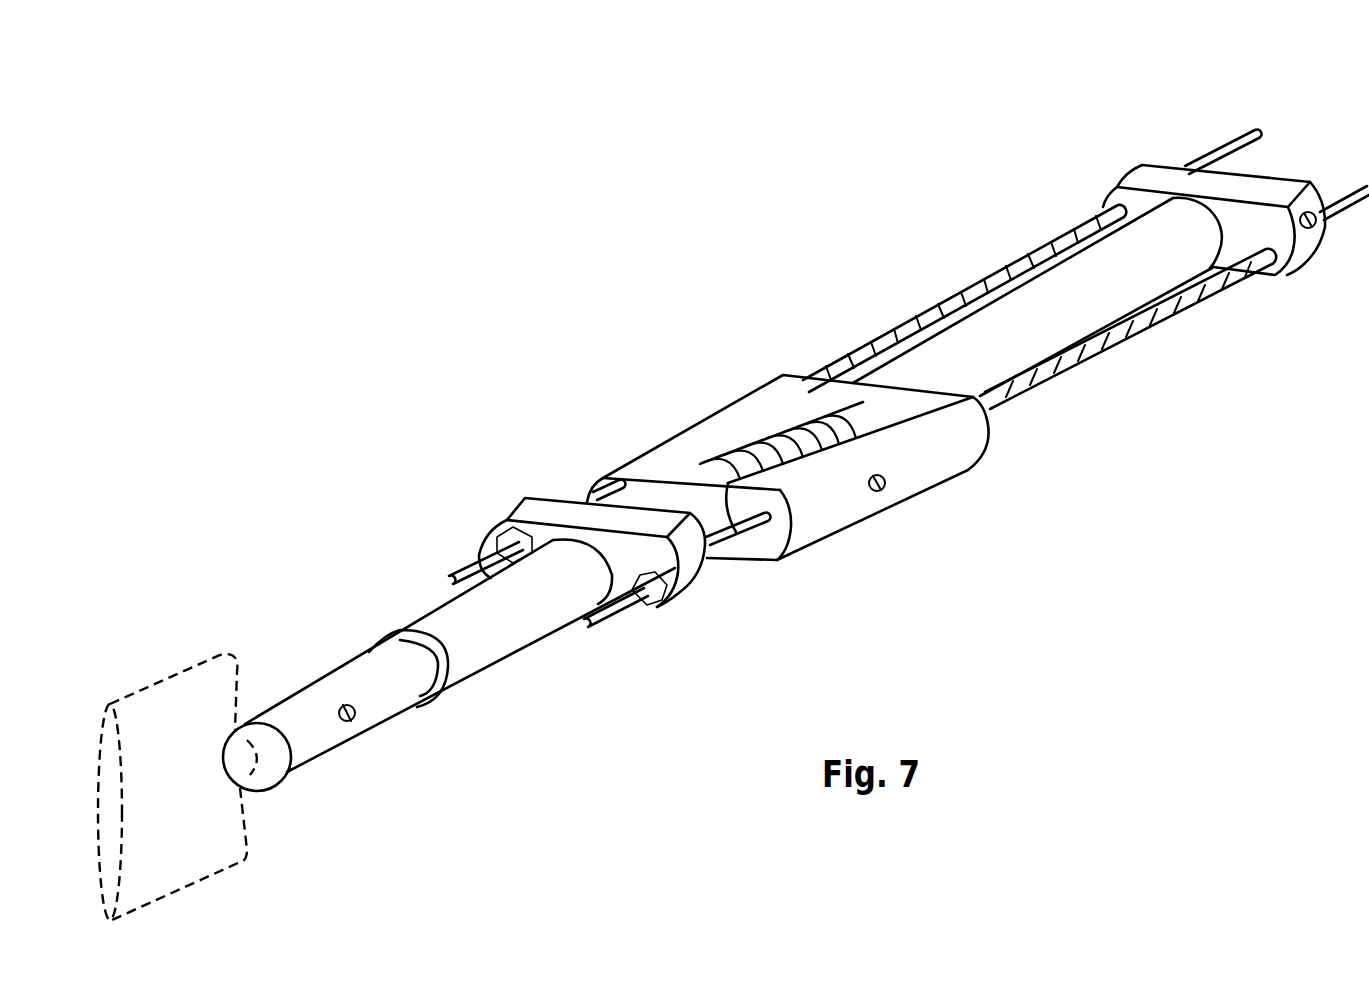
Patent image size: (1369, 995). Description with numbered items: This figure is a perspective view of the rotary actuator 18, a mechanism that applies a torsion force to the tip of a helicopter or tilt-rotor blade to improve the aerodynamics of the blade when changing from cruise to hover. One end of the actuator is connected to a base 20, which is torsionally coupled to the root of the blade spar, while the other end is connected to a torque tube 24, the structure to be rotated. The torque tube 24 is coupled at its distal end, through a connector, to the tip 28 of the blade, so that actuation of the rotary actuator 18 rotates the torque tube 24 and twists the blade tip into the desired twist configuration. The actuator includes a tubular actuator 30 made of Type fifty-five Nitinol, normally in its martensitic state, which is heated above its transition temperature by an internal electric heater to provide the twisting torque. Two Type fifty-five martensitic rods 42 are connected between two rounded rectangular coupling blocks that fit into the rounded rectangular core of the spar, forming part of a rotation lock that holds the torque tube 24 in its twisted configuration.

The rotary actuator 18 is at (815, 205).
The base 20 is at (1255, 190).
The torque tube 24 is at (290, 697).
The tip 28 is at (428, 714).
The tubular actuator 30 is at (1031, 296).
The martensitic rods 42 is at (1095, 220).